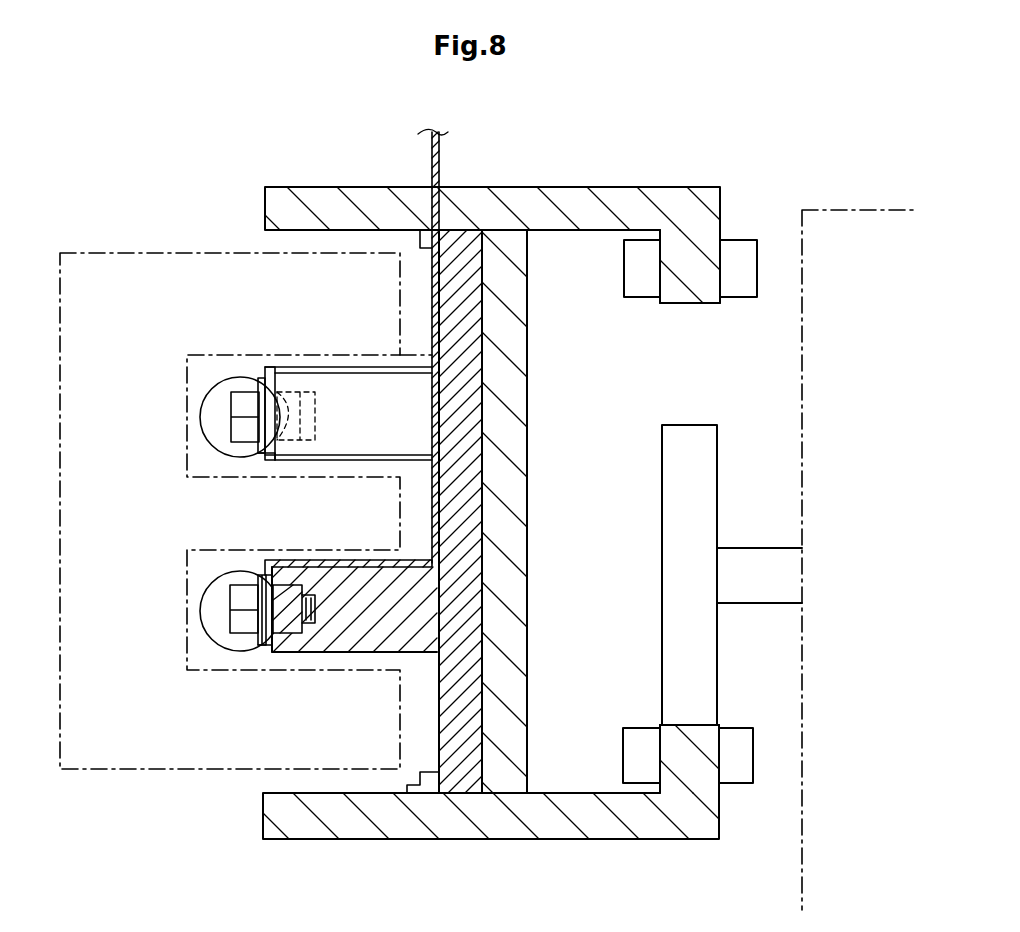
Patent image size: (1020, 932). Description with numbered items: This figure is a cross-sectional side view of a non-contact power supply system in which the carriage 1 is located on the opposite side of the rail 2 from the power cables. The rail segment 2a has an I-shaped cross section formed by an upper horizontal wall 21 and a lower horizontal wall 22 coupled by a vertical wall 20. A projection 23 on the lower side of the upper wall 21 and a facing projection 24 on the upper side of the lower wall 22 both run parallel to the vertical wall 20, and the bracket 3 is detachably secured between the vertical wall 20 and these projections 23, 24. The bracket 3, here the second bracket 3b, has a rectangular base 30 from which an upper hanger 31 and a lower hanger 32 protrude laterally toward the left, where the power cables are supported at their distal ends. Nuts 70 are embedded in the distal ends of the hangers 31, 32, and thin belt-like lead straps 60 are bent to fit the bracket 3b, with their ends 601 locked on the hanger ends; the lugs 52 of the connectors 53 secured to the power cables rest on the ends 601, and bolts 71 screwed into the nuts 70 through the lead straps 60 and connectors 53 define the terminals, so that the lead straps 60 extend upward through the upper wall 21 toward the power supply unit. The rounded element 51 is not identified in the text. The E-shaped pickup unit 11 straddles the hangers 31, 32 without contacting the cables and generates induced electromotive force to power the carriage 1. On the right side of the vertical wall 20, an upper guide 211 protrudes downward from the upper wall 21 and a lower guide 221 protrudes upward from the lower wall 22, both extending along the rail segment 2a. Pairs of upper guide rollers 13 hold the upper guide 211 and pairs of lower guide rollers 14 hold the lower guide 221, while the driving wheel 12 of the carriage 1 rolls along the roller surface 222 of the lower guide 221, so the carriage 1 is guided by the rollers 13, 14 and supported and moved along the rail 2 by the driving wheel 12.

The carriage 1 is at (853, 208).
The rail 2 is at (584, 154).
The rail segment 2a is at (492, 207).
The bracket 3 is at (520, 461).
The second bracket 3b is at (460, 511).
The pickup unit 11 is at (120, 772).
The driving wheel 12 is at (705, 472).
The upper guide rollers 13 is at (642, 292).
The lower guide rollers 14 is at (640, 758).
The vertical wall 20 is at (510, 297).
The upper horizontal wall 21 is at (617, 192).
The lower horizontal wall 22 is at (545, 824).
The projection 23 is at (425, 240).
The projection 24 is at (413, 800).
The base 30 is at (470, 680).
The upper hanger 31 is at (373, 383).
The lower hanger 32 is at (388, 645).
The spherical bushing 51 is at (225, 445).
The lug 52 is at (261, 378).
The connector 53 is at (225, 380).
The lead strap 60 is at (316, 367).
The end of lead strap 601 is at (265, 460).
The nut 70 is at (320, 405).
The bolt 71 is at (240, 412).
The upper guide 211 is at (695, 267).
The lower guide 221 is at (693, 780).
The roller surface 222 is at (683, 727).